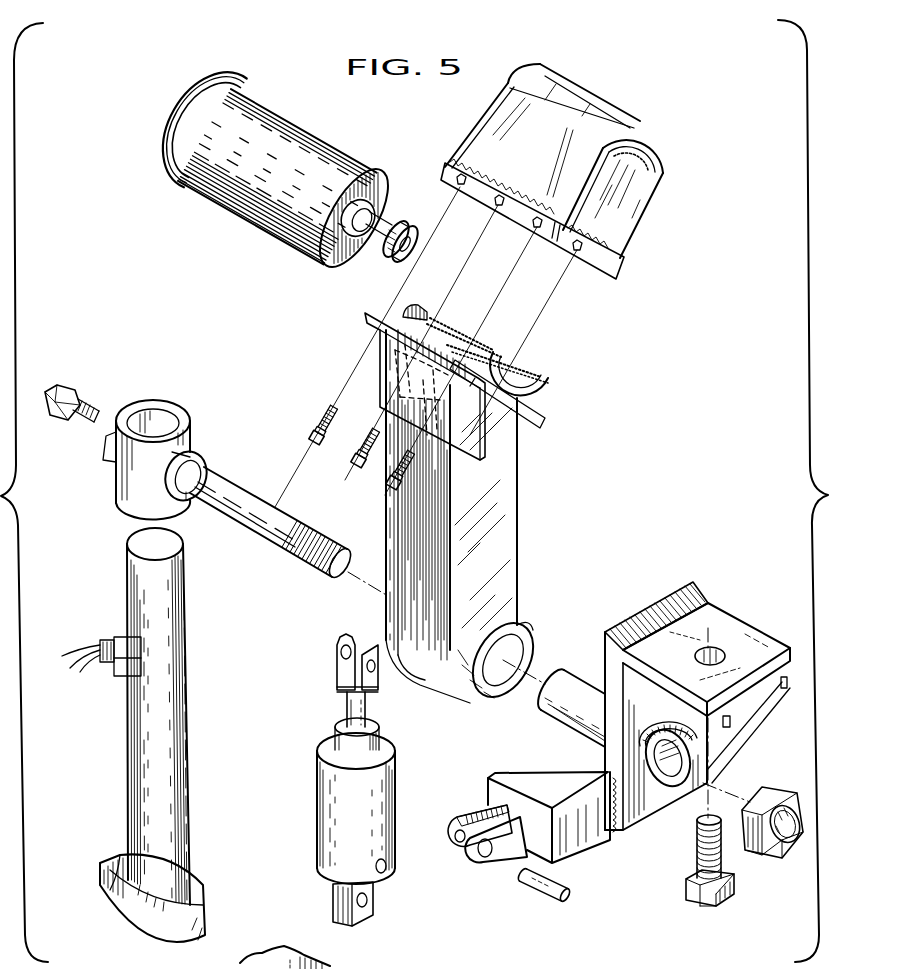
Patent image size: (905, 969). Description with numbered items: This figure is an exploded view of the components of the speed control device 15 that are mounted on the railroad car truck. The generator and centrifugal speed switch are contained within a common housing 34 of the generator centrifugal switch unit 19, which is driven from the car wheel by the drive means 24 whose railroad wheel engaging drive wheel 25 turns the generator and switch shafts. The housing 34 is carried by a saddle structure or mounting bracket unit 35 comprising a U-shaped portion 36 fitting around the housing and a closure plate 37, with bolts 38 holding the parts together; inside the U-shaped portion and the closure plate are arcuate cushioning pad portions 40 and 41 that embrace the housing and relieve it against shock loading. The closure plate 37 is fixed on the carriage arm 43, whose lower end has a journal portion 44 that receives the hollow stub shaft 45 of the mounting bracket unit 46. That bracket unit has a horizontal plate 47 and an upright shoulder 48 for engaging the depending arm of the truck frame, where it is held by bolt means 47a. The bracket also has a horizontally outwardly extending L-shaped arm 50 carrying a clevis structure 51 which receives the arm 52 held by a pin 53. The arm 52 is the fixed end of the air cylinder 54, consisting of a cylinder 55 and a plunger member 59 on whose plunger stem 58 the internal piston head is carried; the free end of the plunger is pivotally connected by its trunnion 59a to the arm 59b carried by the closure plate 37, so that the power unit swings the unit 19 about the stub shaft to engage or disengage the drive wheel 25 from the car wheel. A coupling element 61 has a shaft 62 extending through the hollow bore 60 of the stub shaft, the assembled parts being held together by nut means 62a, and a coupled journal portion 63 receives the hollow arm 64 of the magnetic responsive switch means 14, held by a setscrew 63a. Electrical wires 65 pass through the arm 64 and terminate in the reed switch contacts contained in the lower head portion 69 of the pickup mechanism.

The magnetic responsive switch means 14 is at (161, 745).
The speed control device 15 is at (469, 506).
The generator centrifugal switch unit 19 is at (295, 185).
The drive means 24 is at (410, 210).
The drive wheel 25 is at (395, 253).
The housing 34 is at (255, 207).
The mounting bracket unit 35 is at (578, 156).
The U-shaped portion 36 is at (633, 108).
The closure plate 37 is at (545, 410).
The bolts 38 is at (310, 432).
The arcuate cushioning pad portion 40 is at (663, 173).
The arcuate cushioning pad portion 41 is at (550, 348).
The carriage arm 43 is at (502, 563).
The journal portion 44 is at (528, 647).
The stub shaft 45 is at (577, 697).
The mounting bracket unit 46 is at (706, 710).
The horizontal plate 47 is at (762, 633).
The bolt means 47a is at (728, 904).
The upright shoulder 48 is at (650, 613).
The L-shaped arm 50 is at (536, 841).
The clevis structure 51 is at (500, 852).
The arm 52 is at (362, 915).
The pin 53 is at (538, 893).
The air cylinder 54 is at (353, 787).
The cylinder 55 is at (397, 787).
The plunger stem 58 is at (366, 713).
The plunger member 59 is at (319, 669).
The trunnion 59a is at (340, 647).
The arm 59b is at (382, 378).
The hollow bore 60 is at (667, 775).
The coupling element 61 is at (272, 510).
The shaft 62 is at (250, 528).
The nut means 62a is at (774, 858).
The coupled journal portion 63 is at (155, 402).
The setscrew 63a is at (55, 385).
The arm 64 is at (128, 740).
The electrical wires 65 is at (78, 632).
The head portion 69 is at (140, 920).